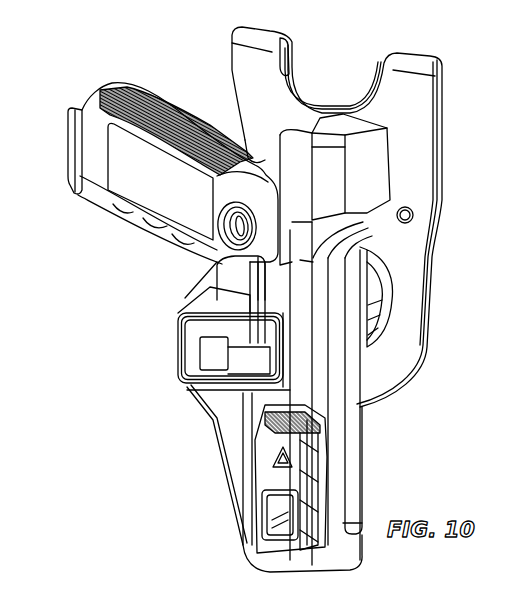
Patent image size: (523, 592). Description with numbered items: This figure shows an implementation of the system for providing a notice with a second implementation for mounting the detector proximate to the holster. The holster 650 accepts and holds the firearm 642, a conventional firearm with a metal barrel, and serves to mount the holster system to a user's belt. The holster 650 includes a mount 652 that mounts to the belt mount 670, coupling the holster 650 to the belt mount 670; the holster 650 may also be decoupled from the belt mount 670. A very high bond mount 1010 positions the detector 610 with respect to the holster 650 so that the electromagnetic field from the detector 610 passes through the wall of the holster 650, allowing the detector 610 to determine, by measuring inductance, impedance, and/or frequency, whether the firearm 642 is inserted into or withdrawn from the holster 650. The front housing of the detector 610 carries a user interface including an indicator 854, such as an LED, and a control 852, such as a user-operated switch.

The firearm 642 is at (70, 132).
The belt mount 670 is at (434, 60).
The mount 652 is at (395, 293).
The holster 650 is at (180, 318).
The indicator 854 is at (262, 428).
The detector 610 is at (255, 470).
The control 852 is at (263, 527).
The very high bond mount 1010 is at (346, 503).